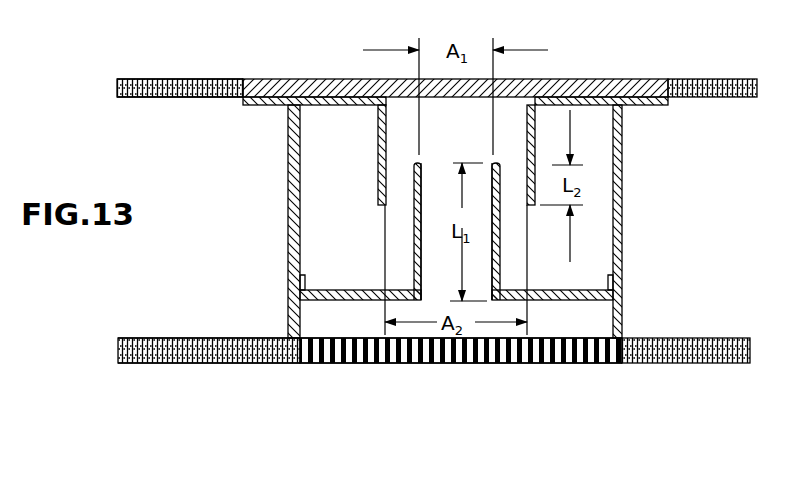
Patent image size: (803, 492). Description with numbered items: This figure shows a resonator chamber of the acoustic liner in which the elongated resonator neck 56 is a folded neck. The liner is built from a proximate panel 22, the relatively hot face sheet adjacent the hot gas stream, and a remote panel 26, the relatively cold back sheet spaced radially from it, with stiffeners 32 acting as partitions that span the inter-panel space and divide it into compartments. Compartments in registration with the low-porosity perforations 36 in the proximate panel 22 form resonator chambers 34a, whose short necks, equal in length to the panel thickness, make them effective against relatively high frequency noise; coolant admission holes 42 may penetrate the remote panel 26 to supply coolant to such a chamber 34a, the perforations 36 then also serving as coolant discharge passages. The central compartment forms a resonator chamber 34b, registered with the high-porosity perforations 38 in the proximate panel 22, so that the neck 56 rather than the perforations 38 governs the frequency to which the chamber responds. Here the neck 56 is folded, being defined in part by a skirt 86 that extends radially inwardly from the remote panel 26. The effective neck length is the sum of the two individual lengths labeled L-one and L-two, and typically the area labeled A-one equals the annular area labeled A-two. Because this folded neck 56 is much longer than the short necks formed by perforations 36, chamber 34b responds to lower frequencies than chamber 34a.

The proximate panel 22 is at (698, 366).
The remote panel 26 is at (716, 78).
The stiffeners 32 is at (288, 183).
The resonator chamber 34a is at (245, 222).
The resonator chamber 34b is at (355, 265).
The perforations 36 is at (202, 363).
The perforations 38 is at (545, 363).
The coolant admission holes 42 is at (179, 81).
The resonator neck 56 is at (503, 115).
The skirt 86 is at (377, 178).